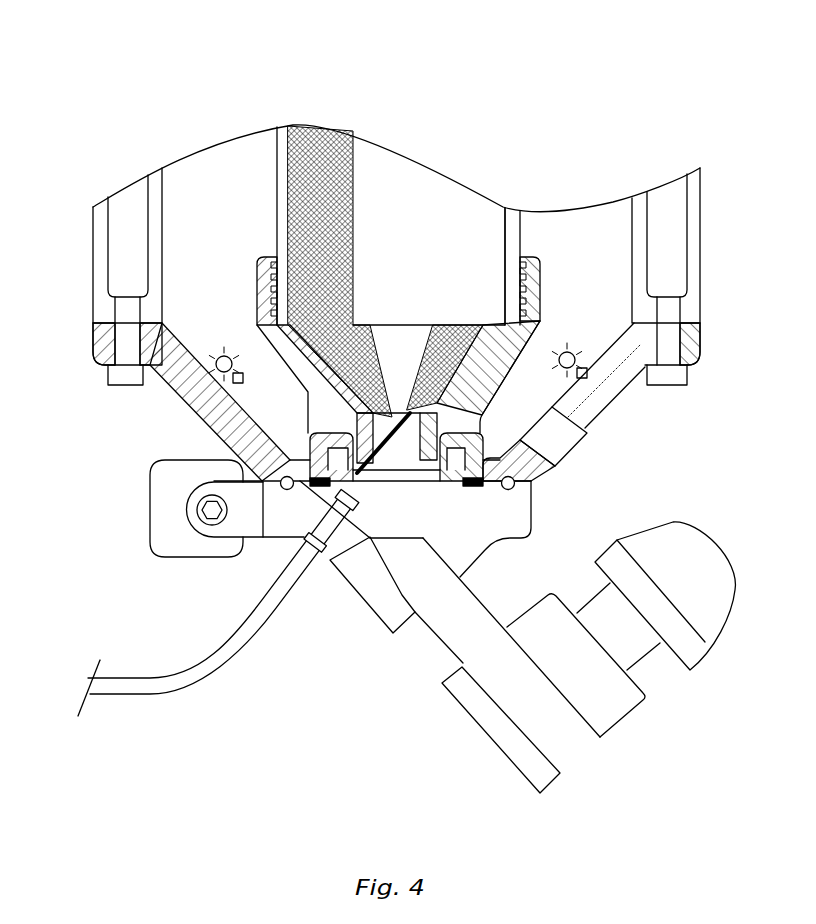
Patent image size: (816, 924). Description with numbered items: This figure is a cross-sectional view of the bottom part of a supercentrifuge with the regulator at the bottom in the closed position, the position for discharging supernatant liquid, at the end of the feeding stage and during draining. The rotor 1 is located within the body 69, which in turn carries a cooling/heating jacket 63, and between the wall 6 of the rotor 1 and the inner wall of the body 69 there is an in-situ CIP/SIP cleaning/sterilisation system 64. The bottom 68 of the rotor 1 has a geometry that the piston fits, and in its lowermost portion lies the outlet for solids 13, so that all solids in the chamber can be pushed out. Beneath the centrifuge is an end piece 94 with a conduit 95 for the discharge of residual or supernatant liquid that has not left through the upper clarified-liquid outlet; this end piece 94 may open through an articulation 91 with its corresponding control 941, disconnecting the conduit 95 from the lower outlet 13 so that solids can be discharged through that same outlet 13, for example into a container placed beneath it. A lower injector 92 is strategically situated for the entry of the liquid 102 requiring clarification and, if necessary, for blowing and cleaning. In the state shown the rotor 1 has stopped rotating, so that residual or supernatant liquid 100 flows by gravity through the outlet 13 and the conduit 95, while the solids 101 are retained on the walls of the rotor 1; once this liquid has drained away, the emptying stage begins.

The rotor 1 is at (410, 200).
The wall of rotor 6 is at (521, 236).
The outlet for solids 13 is at (410, 460).
The cooling/heating jacket 63 is at (127, 203).
The in-situ CIP/SIP cleaning/sterilisation system 64 is at (183, 383).
The bottom of rotor 68 is at (257, 290).
The body 69 is at (163, 225).
The articulation 91 is at (187, 503).
The lower injector 92 is at (320, 522).
The end piece 94 is at (383, 612).
The conduit for the discharge of supernatant liquid 95 is at (527, 710).
The residual or supernatant liquid 100 is at (345, 130).
The solids 101 is at (290, 172).
The liquid requiring clarification 102 is at (387, 455).
The control 941 is at (675, 540).